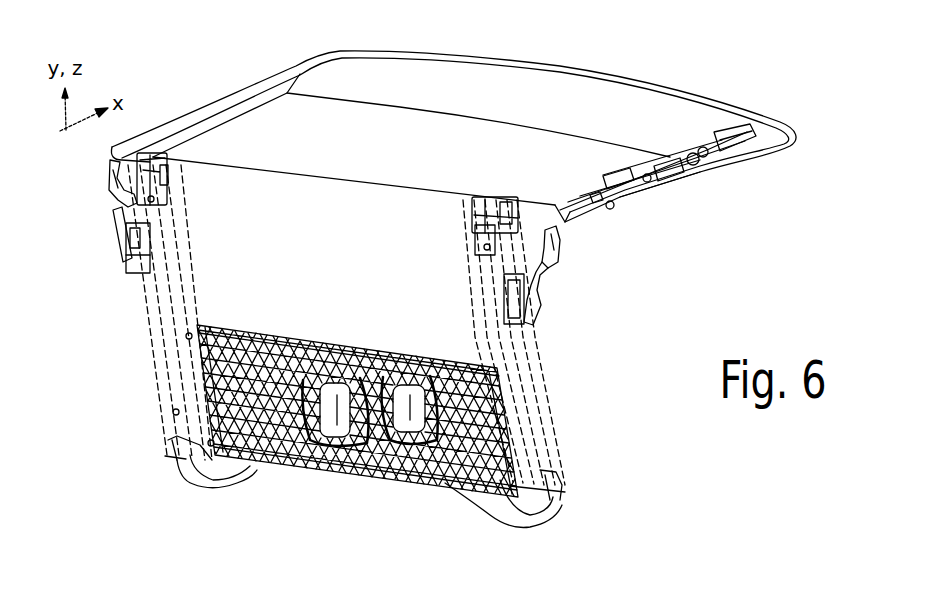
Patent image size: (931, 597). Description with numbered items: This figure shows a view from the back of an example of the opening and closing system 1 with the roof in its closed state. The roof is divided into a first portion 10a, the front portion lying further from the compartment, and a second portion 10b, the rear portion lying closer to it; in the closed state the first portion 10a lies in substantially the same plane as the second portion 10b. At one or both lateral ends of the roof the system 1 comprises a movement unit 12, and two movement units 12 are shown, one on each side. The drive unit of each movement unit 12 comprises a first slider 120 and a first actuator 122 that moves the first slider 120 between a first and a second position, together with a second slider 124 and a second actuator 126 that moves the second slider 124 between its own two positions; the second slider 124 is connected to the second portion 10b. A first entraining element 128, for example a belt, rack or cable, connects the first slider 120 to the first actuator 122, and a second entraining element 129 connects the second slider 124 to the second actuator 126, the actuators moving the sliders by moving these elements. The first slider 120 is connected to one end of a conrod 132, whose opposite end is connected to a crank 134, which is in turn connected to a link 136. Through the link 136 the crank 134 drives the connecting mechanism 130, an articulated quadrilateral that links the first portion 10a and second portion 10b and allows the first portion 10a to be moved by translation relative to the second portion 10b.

The opening and closing system 1 is at (752, 75).
The first portion 10a is at (648, 133).
The second portion 10b is at (255, 128).
The movement unit 12 is at (89, 295).
The first slider 120 is at (138, 274).
The first actuator 122 is at (320, 464).
The second slider 124 is at (163, 207).
The second actuator 126 is at (403, 472).
The first entraining element 128 is at (243, 485).
The second entraining element 129 is at (200, 463).
The connecting mechanism 130 is at (758, 178).
The conrod 132 is at (115, 240).
The crank 134 is at (128, 200).
The link 136 is at (579, 244).